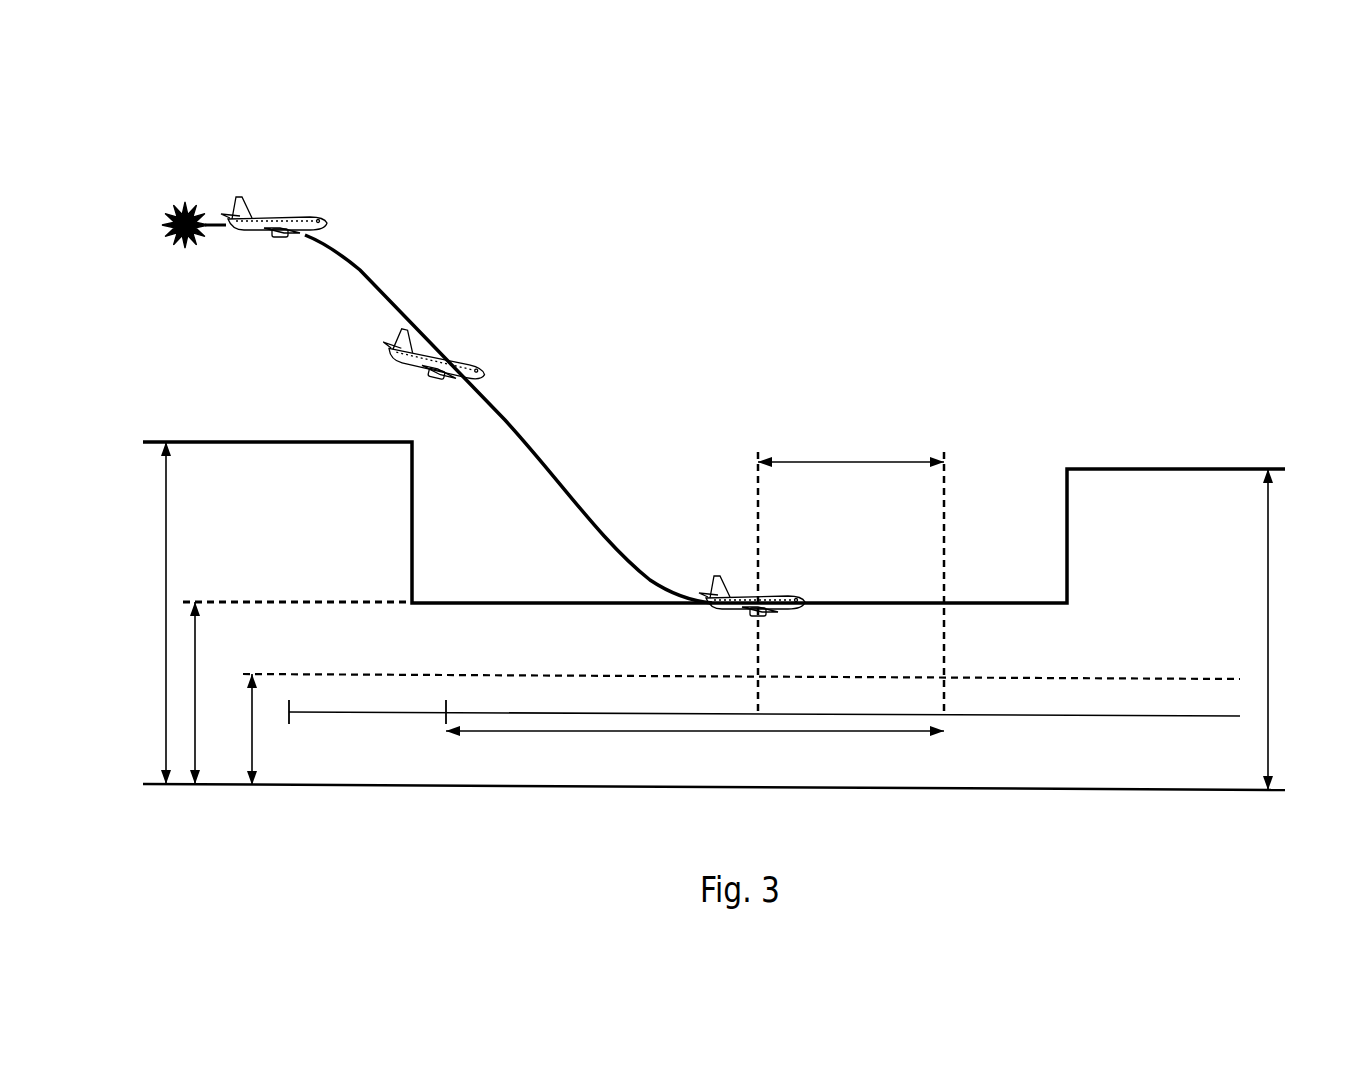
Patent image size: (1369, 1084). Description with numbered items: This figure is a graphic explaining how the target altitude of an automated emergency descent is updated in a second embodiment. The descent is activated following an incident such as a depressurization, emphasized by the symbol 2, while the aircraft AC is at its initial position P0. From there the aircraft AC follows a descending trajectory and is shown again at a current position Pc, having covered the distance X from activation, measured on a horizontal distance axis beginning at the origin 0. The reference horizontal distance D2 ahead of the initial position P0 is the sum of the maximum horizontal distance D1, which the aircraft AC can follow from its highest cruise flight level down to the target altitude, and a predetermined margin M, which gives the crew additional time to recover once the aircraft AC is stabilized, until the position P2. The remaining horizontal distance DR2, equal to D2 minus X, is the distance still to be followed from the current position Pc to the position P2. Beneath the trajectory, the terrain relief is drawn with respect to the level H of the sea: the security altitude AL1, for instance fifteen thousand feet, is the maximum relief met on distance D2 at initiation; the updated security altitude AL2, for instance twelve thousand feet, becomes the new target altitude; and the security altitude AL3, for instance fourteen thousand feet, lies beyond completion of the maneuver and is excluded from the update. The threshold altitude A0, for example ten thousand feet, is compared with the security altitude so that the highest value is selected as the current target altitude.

The symbol 2 is at (195, 206).
The aircraft AC is at (262, 233).
The initial position P0 is at (310, 205).
The current position Pc is at (456, 338).
The position P2 is at (955, 576).
The predetermined margin M is at (846, 462).
The maximum horizontal distance D1 is at (758, 608).
The reference horizontal distance D2 is at (954, 608).
The remaining horizontal distance DR2 is at (598, 731).
The security altitude AL1 is at (166, 597).
The security altitude AL2 is at (195, 713).
The security altitude AL3 is at (1268, 632).
The threshold altitude A0 is at (252, 727).
The level of the sea H is at (150, 790).
The origin of distance axis 0 is at (761, 734).
The distance X is at (439, 731).